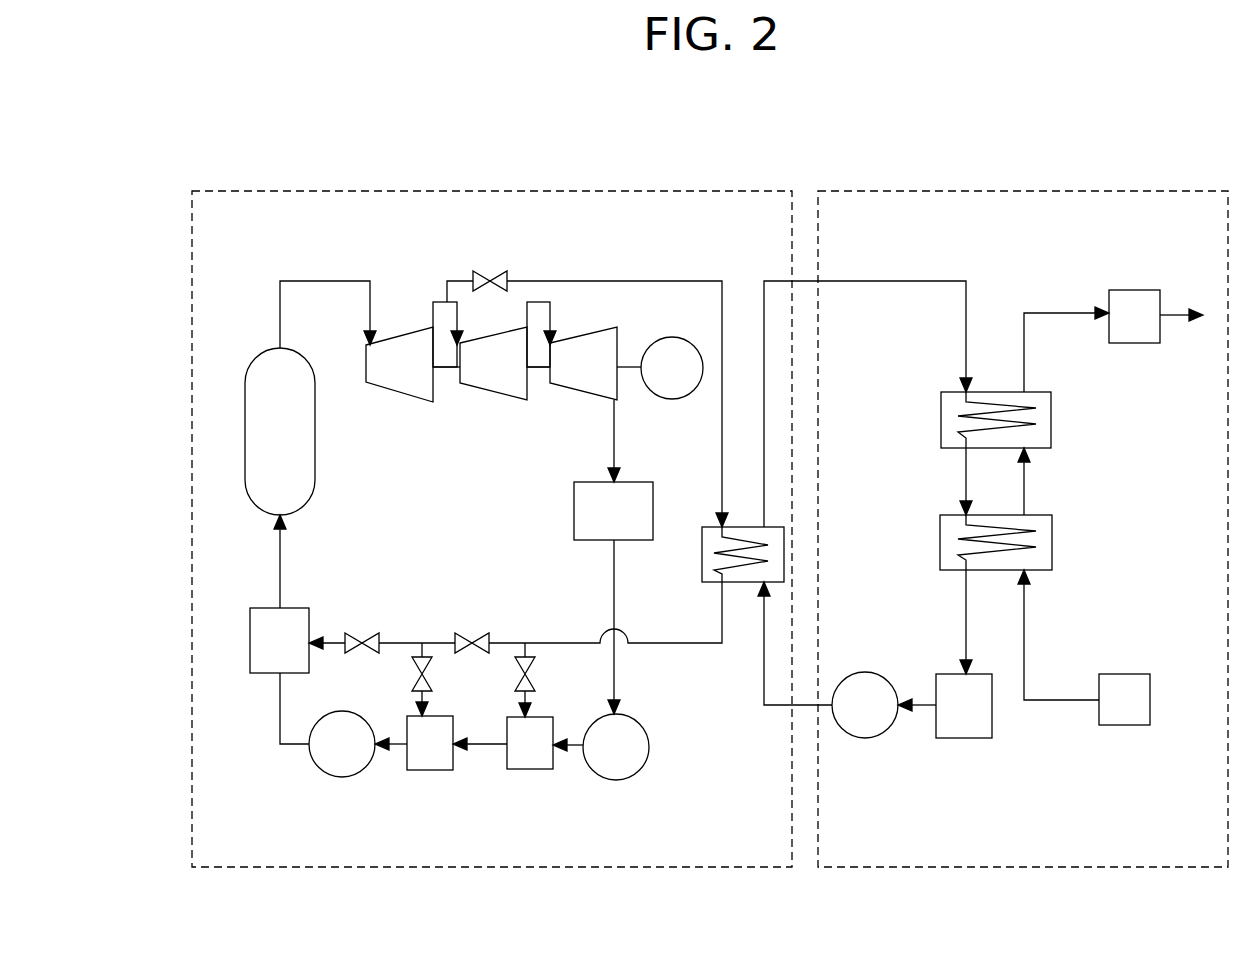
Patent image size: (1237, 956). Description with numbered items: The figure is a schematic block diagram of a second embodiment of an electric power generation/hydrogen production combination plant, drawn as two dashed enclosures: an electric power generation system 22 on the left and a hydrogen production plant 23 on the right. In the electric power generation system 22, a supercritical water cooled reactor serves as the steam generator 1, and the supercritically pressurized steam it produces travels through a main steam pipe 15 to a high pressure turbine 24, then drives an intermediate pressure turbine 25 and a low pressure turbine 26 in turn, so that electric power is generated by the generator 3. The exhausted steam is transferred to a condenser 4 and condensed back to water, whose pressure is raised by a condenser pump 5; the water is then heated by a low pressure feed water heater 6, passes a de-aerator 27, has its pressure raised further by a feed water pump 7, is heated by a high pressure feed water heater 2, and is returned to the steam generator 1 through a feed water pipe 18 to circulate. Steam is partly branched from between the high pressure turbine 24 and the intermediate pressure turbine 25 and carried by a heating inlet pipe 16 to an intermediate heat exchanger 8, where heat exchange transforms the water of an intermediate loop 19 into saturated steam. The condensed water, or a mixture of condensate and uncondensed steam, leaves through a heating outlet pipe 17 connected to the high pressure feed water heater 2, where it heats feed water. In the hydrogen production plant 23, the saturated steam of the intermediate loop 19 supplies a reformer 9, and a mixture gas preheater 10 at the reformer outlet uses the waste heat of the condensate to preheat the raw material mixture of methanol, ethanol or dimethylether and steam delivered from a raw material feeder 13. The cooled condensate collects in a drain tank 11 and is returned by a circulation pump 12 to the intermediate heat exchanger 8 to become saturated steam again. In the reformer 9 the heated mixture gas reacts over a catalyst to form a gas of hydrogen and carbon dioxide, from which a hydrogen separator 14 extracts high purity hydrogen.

The steam generator 1 is at (317, 485).
The high pressure feed water heater 2 is at (250, 662).
The generator 3 is at (672, 400).
The condenser 4 is at (574, 528).
The condenser pump 5 is at (608, 781).
The low pressure feed water heater 6 is at (526, 770).
The feed water pump 7 is at (342, 778).
The intermediate heat exchanger 8 is at (785, 545).
The reformer 9 is at (1052, 410).
The mixture gas preheater 10 is at (1053, 535).
The drain tank 11 is at (963, 740).
The circulation pump 12 is at (840, 736).
The raw material feeder 13 is at (1115, 726).
The hydrogen separator 14 is at (1122, 290).
The main steam pipe 15 is at (332, 281).
The heating inlet pipe 16 is at (700, 281).
The heating outlet pipe 17 is at (690, 648).
The feed water pipe 18 is at (282, 560).
The intermediate loop 19 is at (893, 281).
The electric power generation system 22 is at (510, 191).
The hydrogen production plant 23 is at (1063, 191).
The high pressure turbine 24 is at (398, 397).
The intermediate pressure turbine 25 is at (488, 398).
The low pressure turbine 26 is at (555, 398).
The de-aerator 27 is at (428, 771).